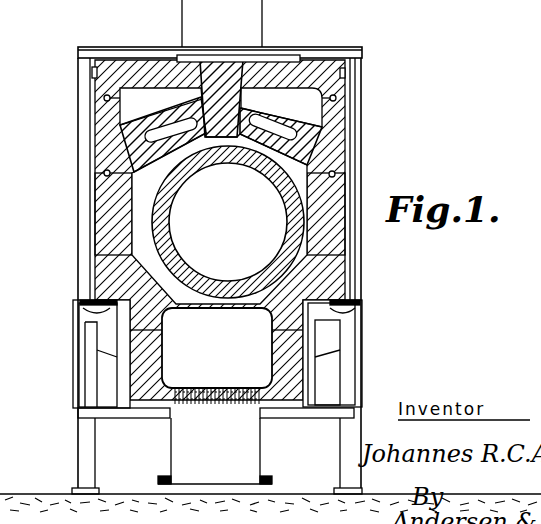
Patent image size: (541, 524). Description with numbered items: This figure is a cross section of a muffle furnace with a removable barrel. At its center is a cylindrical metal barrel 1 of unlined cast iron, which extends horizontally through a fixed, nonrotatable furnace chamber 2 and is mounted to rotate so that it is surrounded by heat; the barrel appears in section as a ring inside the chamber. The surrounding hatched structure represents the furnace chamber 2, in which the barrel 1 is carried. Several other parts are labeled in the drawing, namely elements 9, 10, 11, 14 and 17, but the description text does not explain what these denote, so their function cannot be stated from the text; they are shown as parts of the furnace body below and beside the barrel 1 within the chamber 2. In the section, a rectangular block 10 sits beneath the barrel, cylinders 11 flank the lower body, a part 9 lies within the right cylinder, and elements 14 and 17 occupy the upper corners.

The cylindrical metal barrel 1 is at (270, 222).
The furnace chamber 2 is at (128, 166).
The piston 9 is at (307, 370).
The cylinder block 10 is at (217, 348).
The cylinder 11 is at (80, 312).
The valve slot 14 is at (292, 137).
The chamber 17 is at (161, 106).